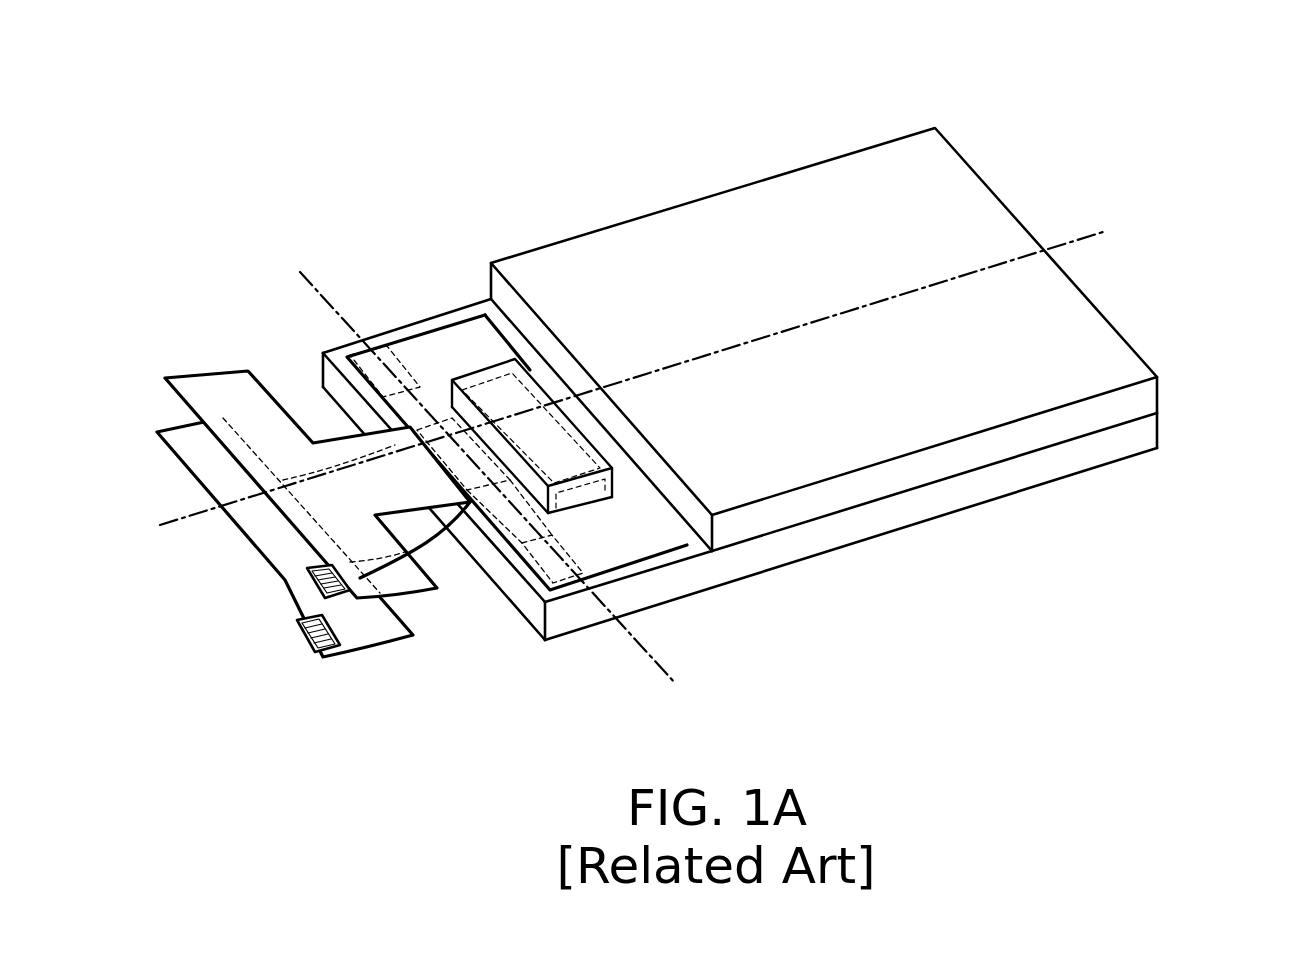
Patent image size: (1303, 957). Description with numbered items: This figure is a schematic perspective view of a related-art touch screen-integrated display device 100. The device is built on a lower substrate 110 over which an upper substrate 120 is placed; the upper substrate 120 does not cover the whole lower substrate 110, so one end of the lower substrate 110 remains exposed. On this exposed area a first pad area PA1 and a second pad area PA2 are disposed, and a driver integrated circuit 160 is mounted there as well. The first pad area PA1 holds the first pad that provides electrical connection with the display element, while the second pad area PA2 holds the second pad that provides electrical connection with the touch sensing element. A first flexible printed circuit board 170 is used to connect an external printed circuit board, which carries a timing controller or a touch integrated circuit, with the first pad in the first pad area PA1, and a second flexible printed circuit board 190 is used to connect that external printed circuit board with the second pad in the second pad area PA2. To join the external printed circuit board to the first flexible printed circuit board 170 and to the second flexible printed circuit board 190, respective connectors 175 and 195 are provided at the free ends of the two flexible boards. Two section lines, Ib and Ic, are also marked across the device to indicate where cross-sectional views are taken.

The touch screen-integrated display device 100 is at (1165, 52).
The lower substrate 110 is at (1140, 440).
The upper substrate 120 is at (1137, 398).
The driver integrated circuit 160 is at (490, 370).
The first flexible printed circuit board 170 is at (233, 528).
The connector 175 is at (312, 653).
The second flexible printed circuit board 190 is at (410, 592).
The connector 195 is at (360, 595).
The first pad area PA1 is at (435, 423).
The second pad area PA2 is at (372, 355).
The section line Ib-Ib' Ib is at (626, 382).
The section line Ic-Ic' Ic is at (484, 477).